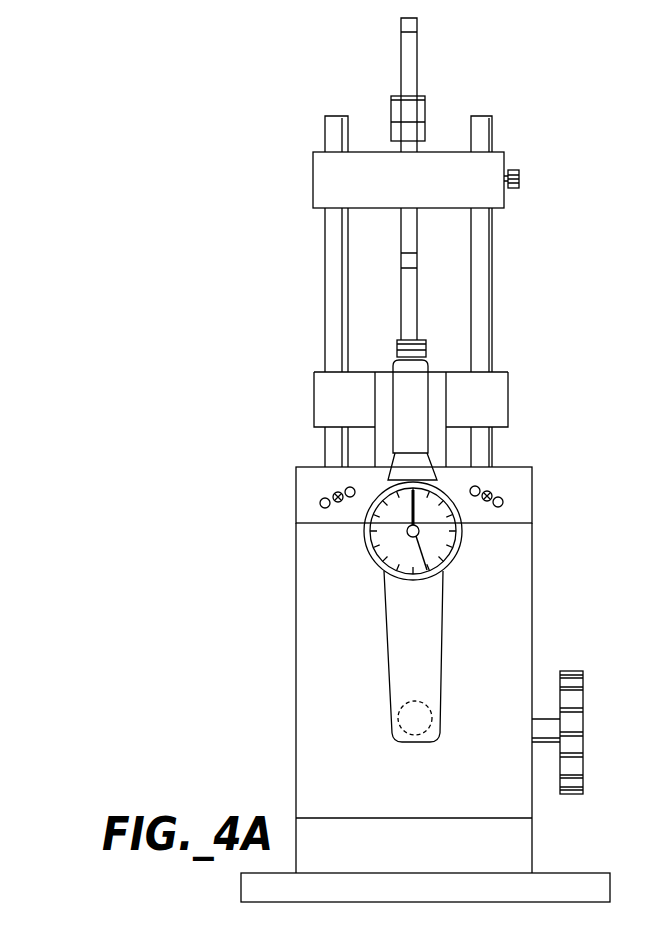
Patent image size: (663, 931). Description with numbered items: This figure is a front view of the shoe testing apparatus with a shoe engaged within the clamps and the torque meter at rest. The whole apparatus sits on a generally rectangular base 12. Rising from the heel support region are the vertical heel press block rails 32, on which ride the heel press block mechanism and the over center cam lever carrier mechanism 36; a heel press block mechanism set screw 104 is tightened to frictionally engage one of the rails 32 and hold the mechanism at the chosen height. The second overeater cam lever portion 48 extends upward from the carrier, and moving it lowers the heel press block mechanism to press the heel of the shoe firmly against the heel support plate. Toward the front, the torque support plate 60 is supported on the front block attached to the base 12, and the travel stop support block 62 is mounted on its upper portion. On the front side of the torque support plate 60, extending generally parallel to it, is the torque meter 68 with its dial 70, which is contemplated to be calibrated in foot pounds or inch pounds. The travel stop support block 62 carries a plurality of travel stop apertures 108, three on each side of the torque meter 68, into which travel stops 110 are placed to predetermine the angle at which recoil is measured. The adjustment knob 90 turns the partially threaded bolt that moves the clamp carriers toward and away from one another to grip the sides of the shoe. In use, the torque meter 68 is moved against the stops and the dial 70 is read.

The base 12 is at (557, 878).
The vertical heel press block rails 32 is at (332, 283).
The over center cam lever carrier mechanism 36 is at (503, 135).
The second overeater cam lever portion 48 is at (416, 63).
The torque support plate 60 is at (517, 596).
The travel stop support block 62 is at (510, 488).
The torque meter 68 is at (395, 633).
The dial 70 is at (363, 537).
The adjustment knob 90 is at (574, 697).
The heel press block mechanism set screw 104 is at (522, 178).
The travel stop apertures 108 is at (350, 492).
The travel stops 110 is at (488, 493).